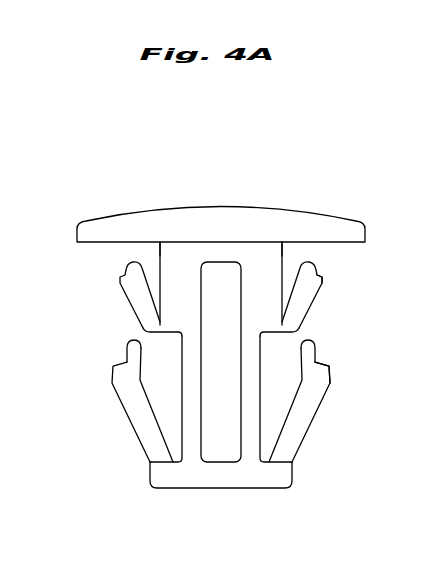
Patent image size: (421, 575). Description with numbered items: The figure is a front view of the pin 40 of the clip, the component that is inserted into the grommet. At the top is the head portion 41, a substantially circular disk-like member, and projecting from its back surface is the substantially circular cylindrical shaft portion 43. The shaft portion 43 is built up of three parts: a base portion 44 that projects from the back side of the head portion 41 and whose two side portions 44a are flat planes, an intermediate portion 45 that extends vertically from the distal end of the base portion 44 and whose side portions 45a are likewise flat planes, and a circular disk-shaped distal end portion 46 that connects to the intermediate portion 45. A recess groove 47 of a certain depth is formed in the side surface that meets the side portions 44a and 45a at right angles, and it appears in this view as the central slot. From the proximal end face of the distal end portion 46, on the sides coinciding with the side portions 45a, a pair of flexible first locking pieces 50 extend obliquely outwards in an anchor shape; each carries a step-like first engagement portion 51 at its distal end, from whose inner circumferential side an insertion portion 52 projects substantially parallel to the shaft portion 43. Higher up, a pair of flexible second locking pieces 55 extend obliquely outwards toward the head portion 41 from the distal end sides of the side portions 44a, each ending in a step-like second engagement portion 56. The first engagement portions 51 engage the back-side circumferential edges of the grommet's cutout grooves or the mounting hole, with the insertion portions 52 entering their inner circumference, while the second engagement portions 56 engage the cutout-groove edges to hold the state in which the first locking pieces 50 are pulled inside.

The pin 40 is at (283, 209).
The head portion 41 is at (315, 229).
The shaft portion 43 is at (265, 433).
The base portion 44 is at (270, 292).
The side portions of base portion 44a is at (160, 252).
The intermediate portion 45 is at (260, 398).
The side portions of intermediate portion 45a is at (143, 334).
The distal end portion 46 is at (230, 480).
The recess groove 47 is at (242, 425).
The first locking piece 50 is at (132, 425).
The first engagement portion 51 is at (331, 370).
The insertion portion 52 is at (320, 350).
The second locking piece 55 is at (123, 298).
The second engagement portion 56 is at (322, 277).